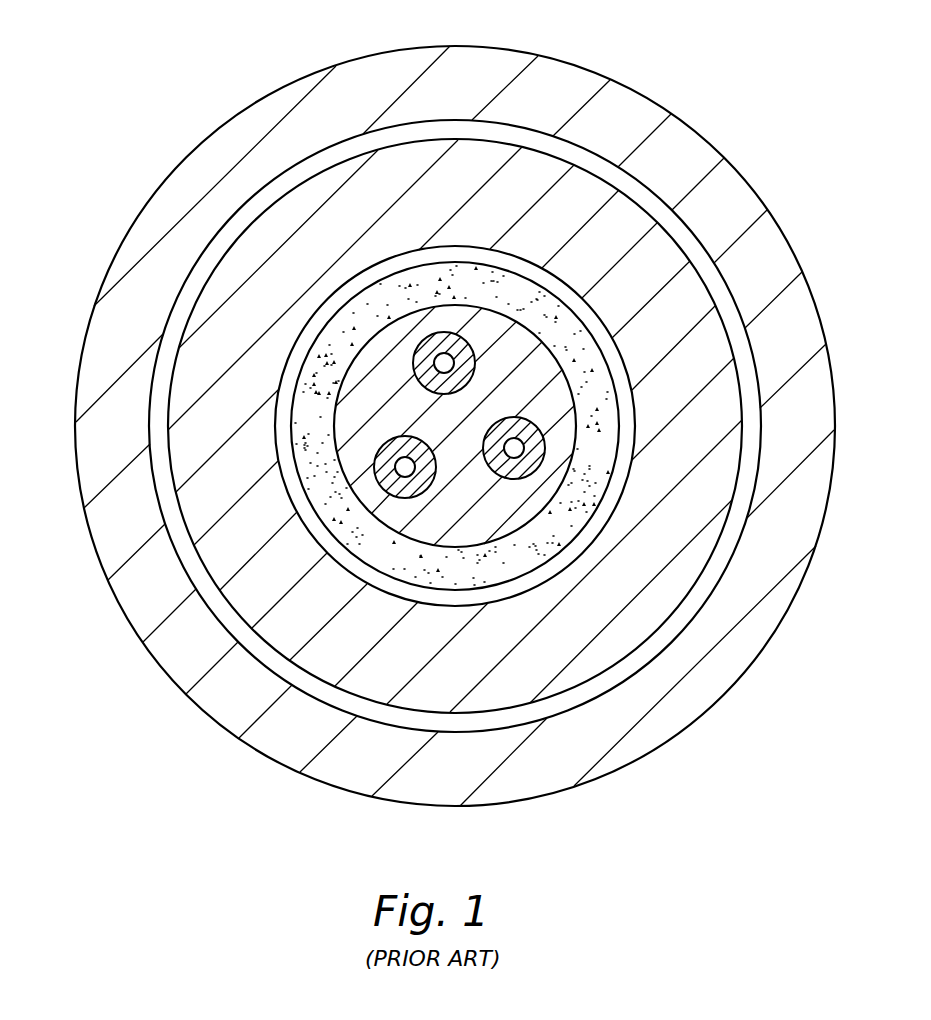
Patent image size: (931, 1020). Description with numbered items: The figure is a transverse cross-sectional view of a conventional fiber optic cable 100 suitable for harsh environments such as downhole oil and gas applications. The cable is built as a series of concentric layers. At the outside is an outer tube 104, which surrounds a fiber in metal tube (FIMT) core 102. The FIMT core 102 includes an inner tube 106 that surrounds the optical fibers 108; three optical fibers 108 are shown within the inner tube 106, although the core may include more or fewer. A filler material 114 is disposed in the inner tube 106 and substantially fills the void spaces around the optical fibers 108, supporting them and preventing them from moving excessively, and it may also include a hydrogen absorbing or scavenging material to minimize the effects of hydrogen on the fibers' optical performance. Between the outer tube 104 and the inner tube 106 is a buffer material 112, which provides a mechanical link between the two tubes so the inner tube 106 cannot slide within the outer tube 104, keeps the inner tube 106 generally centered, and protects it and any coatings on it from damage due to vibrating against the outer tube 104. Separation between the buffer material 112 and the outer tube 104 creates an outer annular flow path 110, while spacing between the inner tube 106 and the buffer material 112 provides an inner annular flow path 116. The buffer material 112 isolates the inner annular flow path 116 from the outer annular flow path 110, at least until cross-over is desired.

The fiber optic cable 100 is at (156, 97).
The fiber in metal tube (FIMT) core 102 is at (353, 157).
The outer tube 104 is at (398, 58).
The inner tube 106 is at (378, 305).
The optical fibers 108 is at (427, 333).
The outer annular flow path 110 is at (448, 130).
The buffer material 112 is at (527, 167).
The filler material 114 is at (462, 313).
The inner annular flow path 116 is at (525, 265).